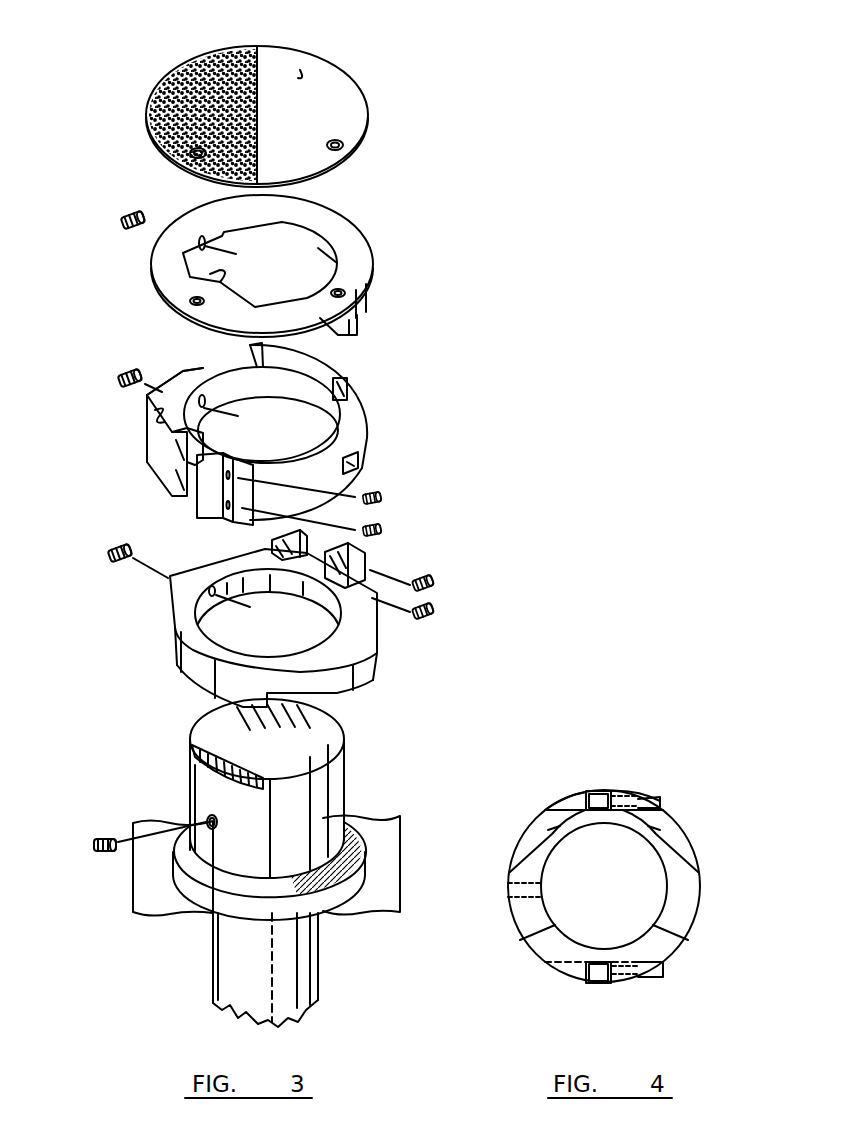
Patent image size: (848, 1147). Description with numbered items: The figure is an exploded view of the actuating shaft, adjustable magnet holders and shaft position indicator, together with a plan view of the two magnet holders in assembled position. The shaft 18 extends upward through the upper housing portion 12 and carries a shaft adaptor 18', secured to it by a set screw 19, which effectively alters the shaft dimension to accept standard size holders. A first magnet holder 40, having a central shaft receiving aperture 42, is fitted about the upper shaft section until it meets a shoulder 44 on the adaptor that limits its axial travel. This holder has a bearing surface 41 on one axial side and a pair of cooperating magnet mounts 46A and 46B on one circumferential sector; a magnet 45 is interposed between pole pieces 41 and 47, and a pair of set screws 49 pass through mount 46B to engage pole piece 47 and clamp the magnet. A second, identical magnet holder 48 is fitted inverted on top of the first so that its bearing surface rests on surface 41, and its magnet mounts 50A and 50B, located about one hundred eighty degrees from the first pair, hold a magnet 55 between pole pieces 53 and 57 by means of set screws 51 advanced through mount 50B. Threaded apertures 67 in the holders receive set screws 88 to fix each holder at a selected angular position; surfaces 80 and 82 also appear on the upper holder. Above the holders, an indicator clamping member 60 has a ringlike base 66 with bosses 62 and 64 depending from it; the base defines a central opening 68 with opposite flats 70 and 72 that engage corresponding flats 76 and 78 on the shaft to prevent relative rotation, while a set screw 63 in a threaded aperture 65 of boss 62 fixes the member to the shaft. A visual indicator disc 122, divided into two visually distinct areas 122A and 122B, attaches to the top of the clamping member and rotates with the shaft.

In FIG. 3, the upper housing portion 12 is at (366, 898).
In FIG. 3, the shaft 18 is at (292, 970).
In FIG. 3, the shaft adaptor 18' is at (267, 788).
In FIG. 4, the shaft adaptor 18' is at (604, 886).
In FIG. 3, the set screw 19 is at (96, 856).
In FIG. 3, the first magnet holder 40 is at (350, 660).
In FIG. 4, the first magnet holder 40 is at (682, 850).
In FIG. 3, the bearing surface 41 is at (362, 620).
In FIG. 4, the bearing surface 41 is at (588, 792).
In FIG. 3, the shaft receiving aperture 42 is at (293, 598).
In FIG. 3, the shoulder 44 is at (350, 802).
In FIG. 4, the magnet 45 is at (600, 794).
In FIG. 3, the magnet mount 46A is at (270, 540).
In FIG. 4, the magnet mount 46A is at (565, 795).
In FIG. 3, the magnet mount 46B is at (350, 560).
In FIG. 4, the magnet mount 46B is at (640, 798).
In FIG. 4, the magnetic pole piece 47 is at (614, 795).
In FIG. 3, the second magnet holder 48 is at (360, 468).
In FIG. 4, the second magnet holder 48 is at (700, 917).
In FIG. 3, the set screws 49 is at (440, 590).
In FIG. 4, the set screws 49 is at (662, 800).
In FIG. 3, the magnet mount 50A is at (162, 490).
In FIG. 4, the magnet mount 50A is at (545, 963).
In FIG. 3, the magnet mount 50B is at (205, 515).
In FIG. 4, the magnet mount 50B is at (647, 968).
In FIG. 3, the set screws 51 is at (390, 505).
In FIG. 4, the set screws 51 is at (664, 970).
In FIG. 4, the magnetic pole piece 53 is at (612, 985).
In FIG. 4, the magnet 55 is at (598, 980).
In FIG. 4, the pole piece 57 is at (586, 985).
In FIG. 3, the indicator clamping member 60 is at (368, 263).
In FIG. 3, the boss 62 is at (210, 243).
In FIG. 3, the set screw 63 is at (165, 230).
In FIG. 3, the boss 64 is at (355, 330).
In FIG. 3, the threaded aperture 65 is at (200, 246).
In FIG. 3, the base 66 is at (362, 264).
In FIG. 3, the threaded apertures 67 is at (204, 394).
In FIG. 4, the threaded apertures 67 is at (510, 884).
In FIG. 3, the central opening 68 is at (276, 305).
In FIG. 3, the flat 70 is at (220, 282).
In FIG. 3, the flat 72 is at (325, 250).
In FIG. 3, the flat 76 is at (218, 768).
In FIG. 3, the flat 78 is at (326, 712).
In FIG. 3, the top surface 80 is at (150, 425).
In FIG. 3, the notch 82 is at (348, 380).
In FIG. 3, the set screws 88 is at (118, 386).
In FIG. 4, the set screws 88 is at (512, 897).
In FIG. 3, the visual indicator disc 122 is at (368, 118).
In FIG. 3, the visually distinct area 122A is at (300, 70).
In FIG. 3, the visually distinct area 122B is at (178, 90).